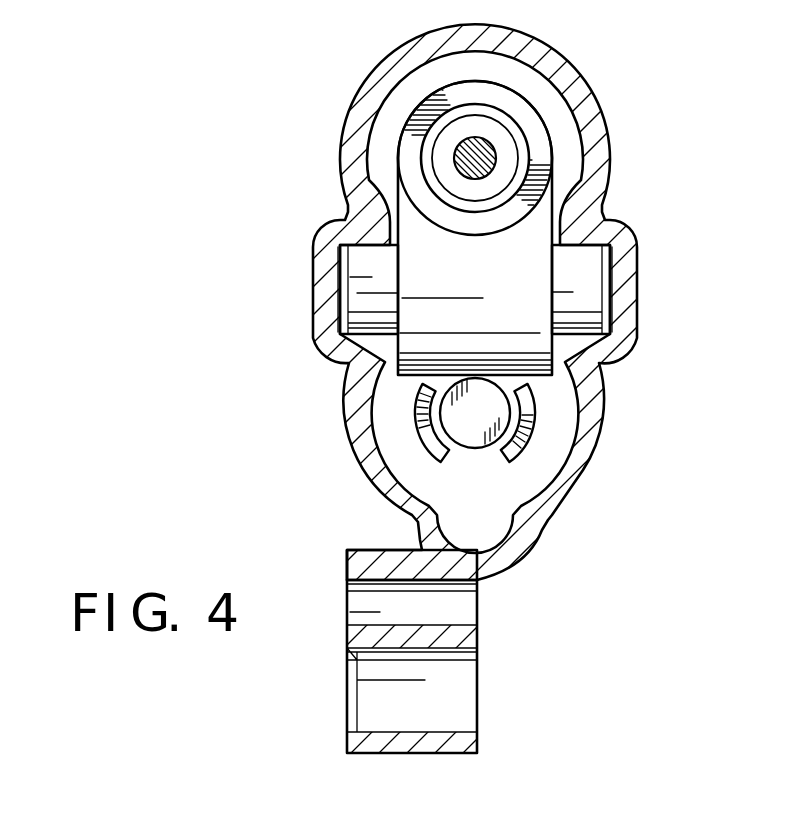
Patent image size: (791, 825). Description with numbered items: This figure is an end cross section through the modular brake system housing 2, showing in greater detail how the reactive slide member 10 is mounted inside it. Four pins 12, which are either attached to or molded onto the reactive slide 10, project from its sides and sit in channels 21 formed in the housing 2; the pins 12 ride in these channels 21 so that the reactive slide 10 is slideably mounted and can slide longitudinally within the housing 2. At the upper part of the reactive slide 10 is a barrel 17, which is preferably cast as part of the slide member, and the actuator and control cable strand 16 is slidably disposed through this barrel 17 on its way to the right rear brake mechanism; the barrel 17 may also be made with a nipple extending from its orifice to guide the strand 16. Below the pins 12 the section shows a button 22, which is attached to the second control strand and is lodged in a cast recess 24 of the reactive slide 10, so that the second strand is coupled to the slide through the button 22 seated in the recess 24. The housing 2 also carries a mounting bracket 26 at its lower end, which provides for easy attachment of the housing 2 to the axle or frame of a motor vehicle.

The housing 2 is at (560, 112).
The reactive slide member 10 is at (488, 265).
The pins 12 is at (373, 277).
The actuator and control cable strand 16 is at (493, 138).
The barrel 17 is at (522, 165).
The channels 21 is at (337, 263).
The button 22 is at (463, 418).
The cast recess 24 is at (535, 421).
The mounting bracket 26 is at (478, 635).